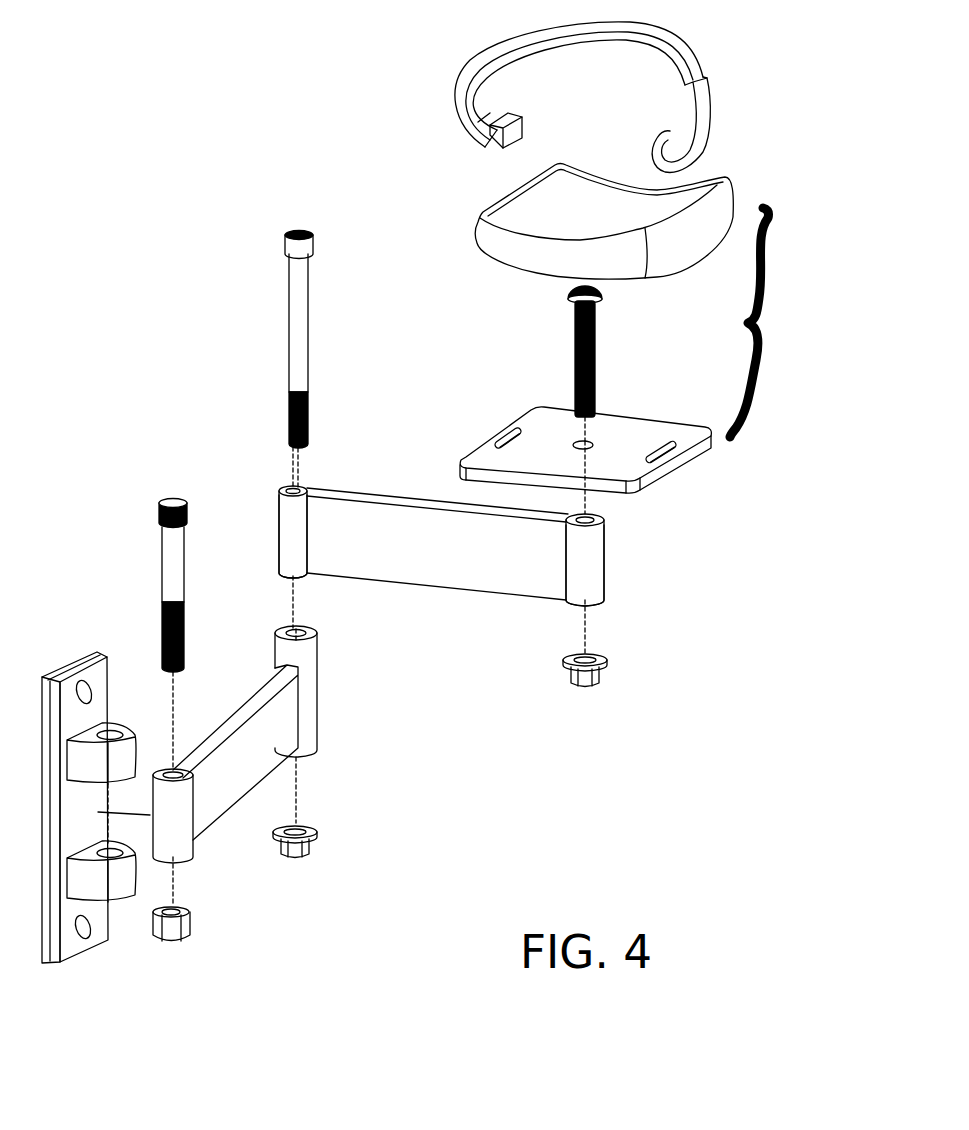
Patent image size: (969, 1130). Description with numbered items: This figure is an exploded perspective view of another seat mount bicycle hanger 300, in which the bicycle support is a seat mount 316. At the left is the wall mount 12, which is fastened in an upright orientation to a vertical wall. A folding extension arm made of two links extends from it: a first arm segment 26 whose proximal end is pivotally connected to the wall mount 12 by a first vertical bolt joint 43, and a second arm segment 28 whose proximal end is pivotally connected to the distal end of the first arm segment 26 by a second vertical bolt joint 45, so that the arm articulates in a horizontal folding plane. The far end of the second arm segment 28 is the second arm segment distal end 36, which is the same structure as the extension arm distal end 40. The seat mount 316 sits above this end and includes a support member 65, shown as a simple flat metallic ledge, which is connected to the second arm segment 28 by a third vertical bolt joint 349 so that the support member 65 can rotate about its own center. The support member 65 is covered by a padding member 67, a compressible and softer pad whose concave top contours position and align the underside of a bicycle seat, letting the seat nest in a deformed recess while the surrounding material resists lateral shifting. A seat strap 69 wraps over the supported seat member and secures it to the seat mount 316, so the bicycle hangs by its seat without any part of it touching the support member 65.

The seat mount bicycle hanger 300 is at (285, 95).
The wall mount 12 is at (72, 660).
The first arm segment 26 is at (212, 722).
The second arm segment 28 is at (413, 494).
The second arm segment distal end 36 is at (605, 565).
The extension arm distal end 40 is at (293, 536).
The first vertical bolt joint 43 is at (175, 488).
The second vertical bolt joint 45 is at (299, 222).
The support member 65 is at (700, 460).
The padding member 67 is at (524, 177).
The seat strap 69 is at (713, 87).
The seat mount 316 is at (775, 322).
The third vertical bolt joint 349 is at (586, 693).